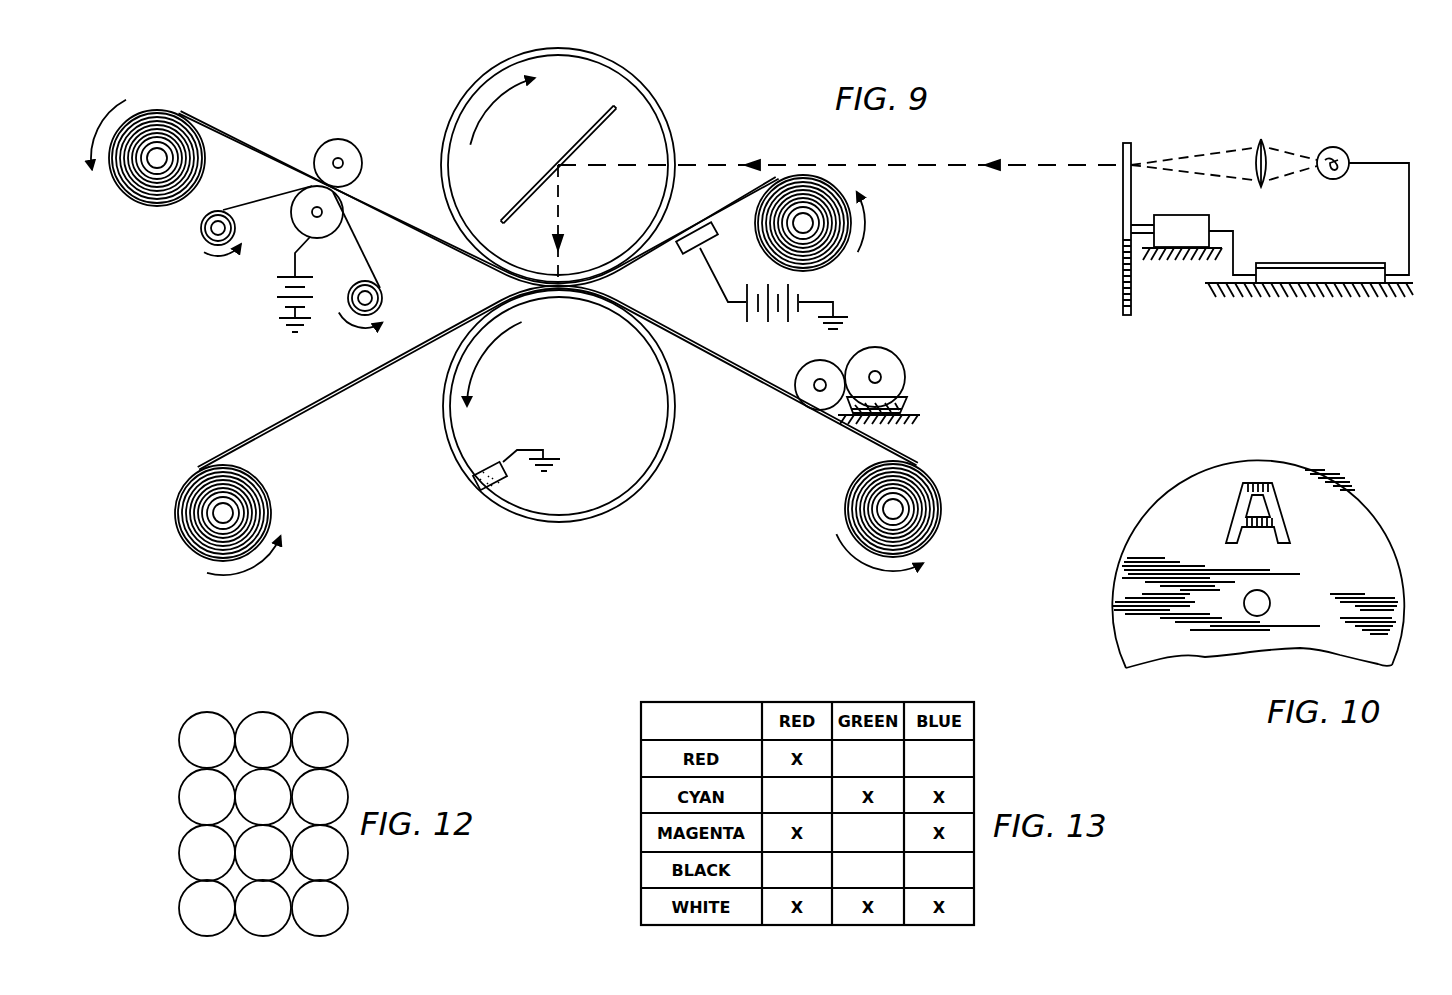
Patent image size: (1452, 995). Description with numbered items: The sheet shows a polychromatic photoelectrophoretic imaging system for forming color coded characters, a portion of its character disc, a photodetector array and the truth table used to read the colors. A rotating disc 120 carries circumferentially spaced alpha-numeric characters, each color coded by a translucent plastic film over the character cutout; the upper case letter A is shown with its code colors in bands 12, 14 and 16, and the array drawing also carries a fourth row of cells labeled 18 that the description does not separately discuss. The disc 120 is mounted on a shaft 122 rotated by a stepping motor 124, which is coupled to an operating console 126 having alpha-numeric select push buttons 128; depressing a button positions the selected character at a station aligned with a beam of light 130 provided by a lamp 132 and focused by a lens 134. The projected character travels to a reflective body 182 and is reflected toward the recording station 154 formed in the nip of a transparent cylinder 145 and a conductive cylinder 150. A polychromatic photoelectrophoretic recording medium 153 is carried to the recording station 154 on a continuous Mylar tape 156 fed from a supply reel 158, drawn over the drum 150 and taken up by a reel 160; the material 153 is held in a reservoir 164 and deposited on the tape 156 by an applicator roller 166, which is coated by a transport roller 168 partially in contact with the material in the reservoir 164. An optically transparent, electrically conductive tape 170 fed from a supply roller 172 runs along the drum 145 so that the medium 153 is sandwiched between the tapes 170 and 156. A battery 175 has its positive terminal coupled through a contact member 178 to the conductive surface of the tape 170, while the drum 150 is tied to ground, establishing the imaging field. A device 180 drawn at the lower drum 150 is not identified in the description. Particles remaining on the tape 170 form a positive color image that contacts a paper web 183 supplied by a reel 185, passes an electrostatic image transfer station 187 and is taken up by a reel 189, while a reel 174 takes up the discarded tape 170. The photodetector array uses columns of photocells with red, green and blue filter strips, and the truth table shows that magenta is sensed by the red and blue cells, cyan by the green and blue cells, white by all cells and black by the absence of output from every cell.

In FIG. 9, the rotating disc 120 is at (1121, 293).
In FIG. 10, the rotating disc 120 is at (1395, 501).
In FIG. 9, the shaft 122 is at (1140, 224).
In FIG. 9, the stepping motor 124 is at (1182, 243).
In FIG. 9, the operating console 126 is at (1280, 264).
In FIG. 9, the alpha-numeric select push buttons 128 is at (1360, 256).
In FIG. 9, the beam of light 130 is at (1186, 157).
In FIG. 9, the lamp 132 is at (1344, 156).
In FIG. 9, the lens 134 is at (1266, 148).
In FIG. 9, the transparent cylinder 145 is at (658, 98).
In FIG. 9, the conductive cylinder 150 is at (660, 465).
In FIG. 9, the polychromatic photoelectrophoretic recording medium 153 is at (918, 409).
In FIG. 9, the recording station 154 is at (563, 296).
In FIG. 9, the Mylar tape 156 is at (778, 396).
In FIG. 9, the supply reel 158 is at (942, 506).
In FIG. 9, the take-up reel 160 is at (186, 549).
In FIG. 9, the reservoir 164 is at (905, 406).
In FIG. 9, the applicator roller 166 is at (800, 376).
In FIG. 9, the transport roller 168 is at (893, 360).
In FIG. 9, the conductive transparent tape 170 is at (728, 213).
In FIG. 9, the supply roller 172 is at (835, 263).
In FIG. 9, the take-up reel 174 is at (136, 203).
In FIG. 9, the battery 175 is at (785, 321).
In FIG. 9, the contact member 178 is at (681, 249).
In FIG. 9, the cleaning / discharge device 180 is at (489, 466).
In FIG. 9, the reflective body 182 is at (592, 125).
In FIG. 9, the paper web 183 is at (360, 256).
In FIG. 9, the supply reel 185 is at (380, 298).
In FIG. 9, the electrostatic image transfer station 187 is at (372, 100).
In FIG. 9, the take-up reel 189 is at (198, 236).
In FIG. 12, the color code band 12 is at (263, 740).
In FIG. 12, the color code band 14 is at (263, 797).
In FIG. 12, the color code band 16 is at (263, 853).
In FIG. 12, the pixel row 18 is at (263, 908).